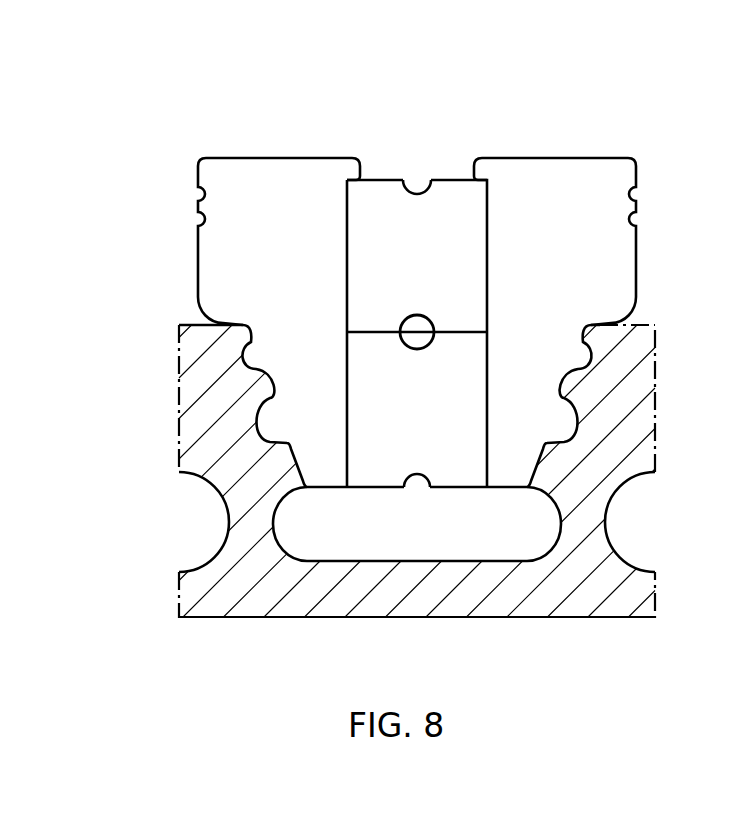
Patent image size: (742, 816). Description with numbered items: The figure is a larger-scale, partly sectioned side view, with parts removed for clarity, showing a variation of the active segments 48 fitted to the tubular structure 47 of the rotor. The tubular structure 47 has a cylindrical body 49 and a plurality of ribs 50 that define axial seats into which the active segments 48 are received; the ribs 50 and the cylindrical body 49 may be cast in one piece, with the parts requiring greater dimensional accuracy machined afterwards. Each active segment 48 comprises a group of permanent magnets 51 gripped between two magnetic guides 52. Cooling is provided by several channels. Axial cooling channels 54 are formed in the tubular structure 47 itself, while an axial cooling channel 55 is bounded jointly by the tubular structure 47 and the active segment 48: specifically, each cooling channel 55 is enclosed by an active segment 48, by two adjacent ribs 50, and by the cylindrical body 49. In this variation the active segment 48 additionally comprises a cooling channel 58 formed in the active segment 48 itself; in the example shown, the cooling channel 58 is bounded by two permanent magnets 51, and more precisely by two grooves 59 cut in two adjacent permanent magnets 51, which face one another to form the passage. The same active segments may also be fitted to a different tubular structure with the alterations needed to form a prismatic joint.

The tubular structure 47 is at (671, 592).
The active segment 48 is at (487, 125).
The cylindrical body 49 is at (218, 590).
The ribs 50 is at (197, 370).
The permanent magnets 51 is at (378, 196).
The magnetic guides 52 is at (283, 158).
The axial cooling channel 54 is at (202, 522).
The axial cooling channel 55 is at (383, 525).
The cooling channel 58 is at (398, 321).
The grooves 59 is at (417, 182).